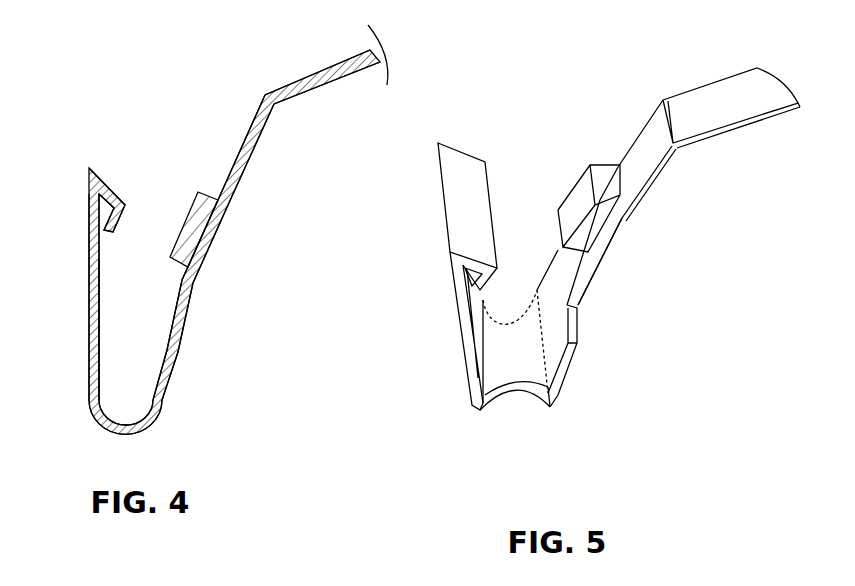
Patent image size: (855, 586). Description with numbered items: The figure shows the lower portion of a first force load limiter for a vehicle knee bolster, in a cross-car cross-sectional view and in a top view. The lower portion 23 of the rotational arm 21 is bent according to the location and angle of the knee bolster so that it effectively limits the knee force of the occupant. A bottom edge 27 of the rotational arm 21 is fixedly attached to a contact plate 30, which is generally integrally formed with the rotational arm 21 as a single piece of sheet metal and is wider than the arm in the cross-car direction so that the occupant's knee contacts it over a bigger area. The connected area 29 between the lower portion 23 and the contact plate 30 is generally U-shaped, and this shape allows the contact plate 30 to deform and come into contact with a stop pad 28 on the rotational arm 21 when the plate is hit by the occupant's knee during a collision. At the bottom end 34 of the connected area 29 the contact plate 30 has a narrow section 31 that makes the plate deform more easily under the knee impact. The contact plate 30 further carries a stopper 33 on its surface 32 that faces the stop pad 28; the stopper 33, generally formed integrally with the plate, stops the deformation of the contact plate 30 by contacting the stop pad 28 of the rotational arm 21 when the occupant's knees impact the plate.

In FIG. 4, the rotational arm 21 is at (312, 75).
In FIG. 5, the rotational arm 21 is at (708, 98).
In FIG. 4, the lower portion 23 is at (137, 87).
In FIG. 5, the lower portion 23 is at (527, 123).
In FIG. 5, the bottom edge 27 is at (547, 345).
In FIG. 4, the stop pad 28 is at (197, 218).
In FIG. 5, the stop pad 28 is at (585, 202).
In FIG. 4, the connected area 29 is at (160, 432).
In FIG. 5, the connected area 29 is at (600, 236).
In FIG. 4, the contact plate 30 is at (90, 307).
In FIG. 5, the contact plate 30 is at (463, 340).
In FIG. 5, the narrow section 31 is at (512, 343).
In FIG. 4, the surface 32 is at (105, 290).
In FIG. 5, the surface 32 is at (478, 307).
In FIG. 4, the stopper 33 is at (117, 197).
In FIG. 5, the stopper 33 is at (465, 172).
In FIG. 4, the bottom end 34 is at (117, 435).
In FIG. 5, the bottom end 34 is at (502, 410).